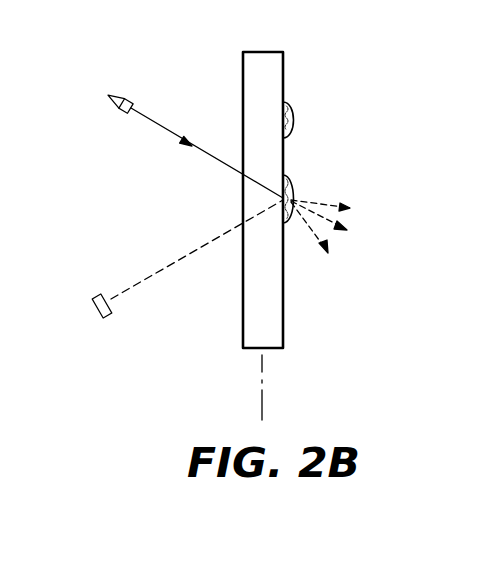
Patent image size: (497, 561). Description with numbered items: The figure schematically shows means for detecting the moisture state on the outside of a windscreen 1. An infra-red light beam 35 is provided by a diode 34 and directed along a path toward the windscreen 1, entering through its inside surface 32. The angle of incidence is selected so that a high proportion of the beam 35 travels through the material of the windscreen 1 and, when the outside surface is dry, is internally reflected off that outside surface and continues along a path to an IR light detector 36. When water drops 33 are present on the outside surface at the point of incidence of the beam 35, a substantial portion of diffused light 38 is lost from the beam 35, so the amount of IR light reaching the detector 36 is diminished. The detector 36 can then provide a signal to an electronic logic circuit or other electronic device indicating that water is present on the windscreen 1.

The windscreen 1 is at (286, 303).
The inside surface 32 is at (243, 330).
The water drops 33 is at (293, 128).
The diode 34 is at (116, 113).
The infra-red light beam 35 is at (162, 125).
The IR light detector 36 is at (110, 318).
The diffused light 38 is at (335, 229).